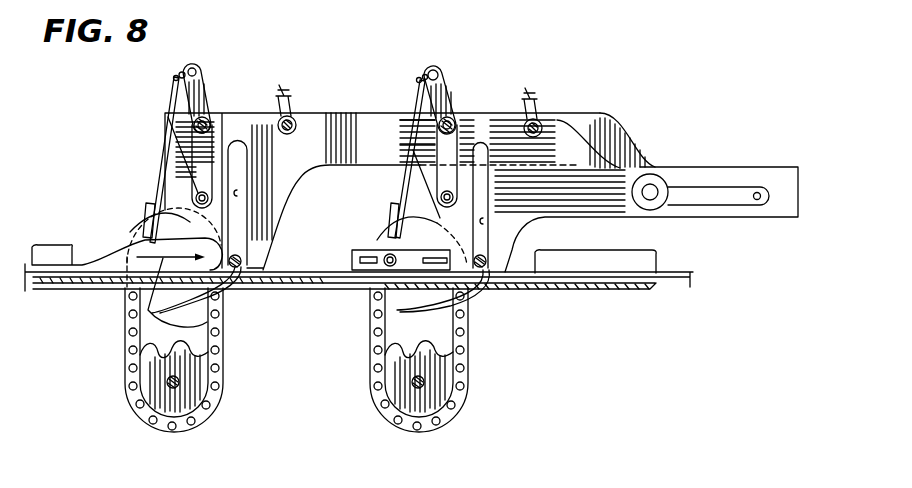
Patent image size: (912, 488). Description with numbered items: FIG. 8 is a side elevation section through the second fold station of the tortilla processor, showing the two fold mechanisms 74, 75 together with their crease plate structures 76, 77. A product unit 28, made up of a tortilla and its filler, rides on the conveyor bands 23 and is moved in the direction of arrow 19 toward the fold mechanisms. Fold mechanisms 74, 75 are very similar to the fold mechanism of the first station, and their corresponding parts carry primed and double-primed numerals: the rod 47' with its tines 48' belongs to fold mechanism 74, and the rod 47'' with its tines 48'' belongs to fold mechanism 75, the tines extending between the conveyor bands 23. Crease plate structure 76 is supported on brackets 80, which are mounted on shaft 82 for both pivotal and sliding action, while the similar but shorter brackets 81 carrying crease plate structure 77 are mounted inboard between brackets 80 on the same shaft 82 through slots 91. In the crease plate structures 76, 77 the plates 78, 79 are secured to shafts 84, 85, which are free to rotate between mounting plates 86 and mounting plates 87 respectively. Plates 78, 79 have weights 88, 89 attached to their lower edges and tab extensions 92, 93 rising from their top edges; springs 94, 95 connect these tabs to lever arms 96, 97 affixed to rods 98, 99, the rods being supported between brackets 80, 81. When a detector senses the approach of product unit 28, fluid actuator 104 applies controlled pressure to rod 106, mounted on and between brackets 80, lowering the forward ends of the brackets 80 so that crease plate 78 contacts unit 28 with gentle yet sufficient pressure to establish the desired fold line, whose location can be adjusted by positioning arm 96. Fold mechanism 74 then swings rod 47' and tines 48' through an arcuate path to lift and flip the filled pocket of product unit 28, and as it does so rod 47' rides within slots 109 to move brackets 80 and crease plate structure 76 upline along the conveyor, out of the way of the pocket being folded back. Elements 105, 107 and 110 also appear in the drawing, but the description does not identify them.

The arrow 19 is at (133, 297).
The conveyor bands 23 is at (690, 288).
The product unit 28 is at (232, 234).
The rod 47' is at (233, 275).
The rod 47'' is at (486, 293).
The tines 48' is at (150, 360).
The tines 48'' is at (440, 360).
The fold mechanism 74 is at (126, 116).
The fold mechanism 75 is at (388, 135).
The crease plate structure 76 is at (147, 188).
The crease plate structure 77 is at (390, 182).
The crease plate 78 is at (158, 170).
The crease plate 79 is at (397, 200).
The brackets 80 is at (290, 177).
The brackets 81 is at (563, 197).
The shaft 82 is at (652, 190).
The shaft 84 is at (205, 108).
The shaft 85 is at (452, 105).
The mounting plates 86 is at (172, 150).
The mounting plates 87 is at (422, 144).
The weight 88 is at (147, 215).
The weight 89 is at (392, 248).
The slots 91 is at (757, 190).
The tab extension 92 is at (174, 78).
The tab extension 93 is at (418, 78).
The spring 94 is at (175, 73).
The spring 95 is at (433, 70).
The lever arm 96 is at (196, 70).
The lever arm 97 is at (445, 70).
The rod 98 is at (211, 122).
The rod 99 is at (456, 122).
The fluid actuator 104 is at (290, 85).
The bolt 105 is at (538, 90).
The rod 106 is at (297, 116).
The clamp 107 is at (545, 120).
The slots 109 is at (242, 190).
The spring 110 is at (487, 222).